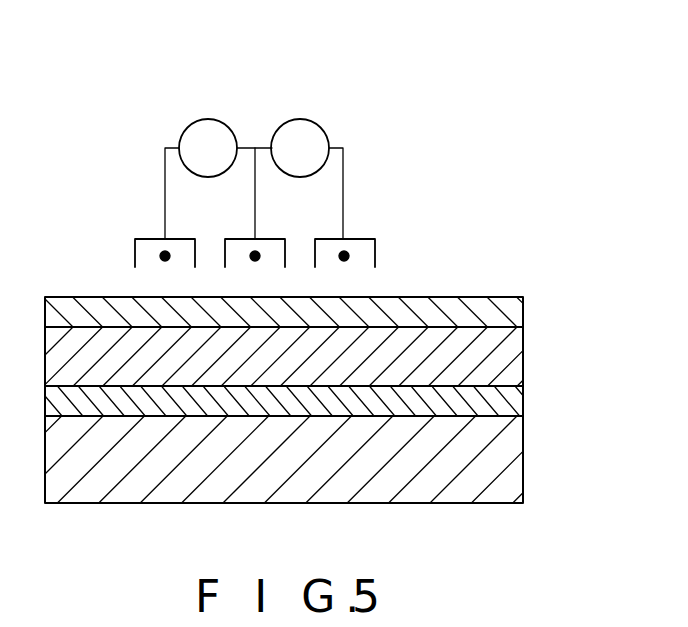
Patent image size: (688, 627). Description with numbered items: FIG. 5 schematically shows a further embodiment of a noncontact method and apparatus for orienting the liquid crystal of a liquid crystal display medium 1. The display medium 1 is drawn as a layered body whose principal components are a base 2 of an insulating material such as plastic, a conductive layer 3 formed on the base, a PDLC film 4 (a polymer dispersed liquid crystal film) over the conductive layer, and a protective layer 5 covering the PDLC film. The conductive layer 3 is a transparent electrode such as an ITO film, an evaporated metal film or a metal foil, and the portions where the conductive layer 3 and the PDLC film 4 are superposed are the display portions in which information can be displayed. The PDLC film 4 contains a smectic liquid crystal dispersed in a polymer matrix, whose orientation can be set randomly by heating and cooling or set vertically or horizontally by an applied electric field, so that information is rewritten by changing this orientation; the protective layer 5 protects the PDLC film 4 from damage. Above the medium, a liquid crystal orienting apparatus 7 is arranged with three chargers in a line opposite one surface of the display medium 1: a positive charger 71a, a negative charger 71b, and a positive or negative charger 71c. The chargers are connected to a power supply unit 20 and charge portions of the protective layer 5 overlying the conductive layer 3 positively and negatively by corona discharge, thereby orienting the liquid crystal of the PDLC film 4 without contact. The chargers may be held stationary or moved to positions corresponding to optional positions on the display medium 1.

The liquid crystal display medium 1 is at (510, 274).
The base 2 is at (523, 473).
The conductive layer 3 is at (523, 405).
The PDLC film 4 is at (523, 365).
The protective layer 5 is at (523, 311).
The liquid crystal orienting apparatus 7 is at (335, 116).
The power supply unit 20 is at (279, 121).
The positive charger 71a is at (147, 238).
The negative charger 71b is at (242, 238).
The positive or negative charger 71c is at (362, 238).